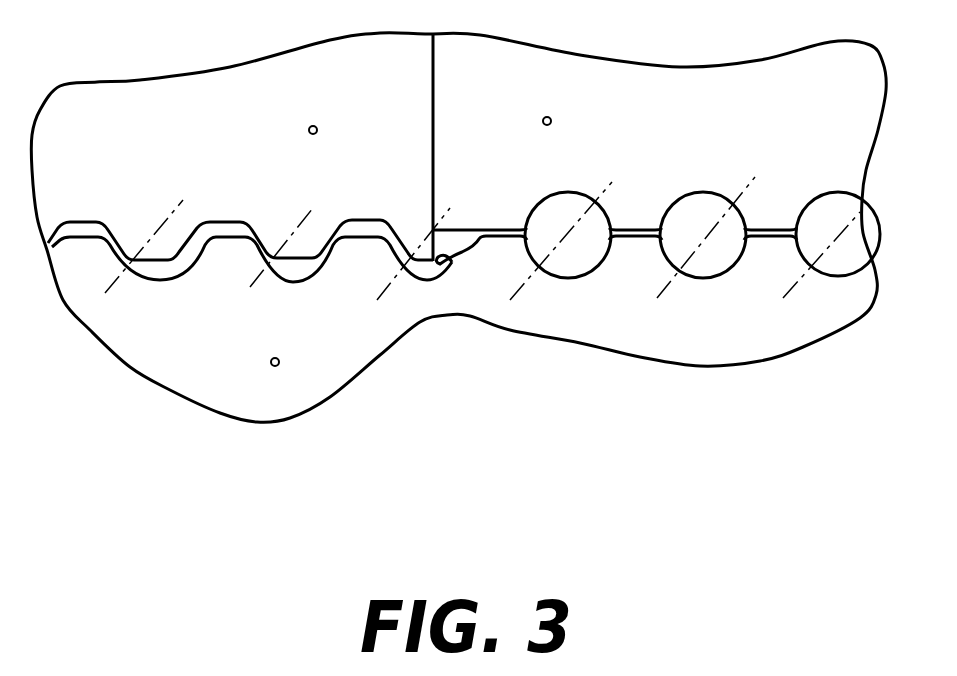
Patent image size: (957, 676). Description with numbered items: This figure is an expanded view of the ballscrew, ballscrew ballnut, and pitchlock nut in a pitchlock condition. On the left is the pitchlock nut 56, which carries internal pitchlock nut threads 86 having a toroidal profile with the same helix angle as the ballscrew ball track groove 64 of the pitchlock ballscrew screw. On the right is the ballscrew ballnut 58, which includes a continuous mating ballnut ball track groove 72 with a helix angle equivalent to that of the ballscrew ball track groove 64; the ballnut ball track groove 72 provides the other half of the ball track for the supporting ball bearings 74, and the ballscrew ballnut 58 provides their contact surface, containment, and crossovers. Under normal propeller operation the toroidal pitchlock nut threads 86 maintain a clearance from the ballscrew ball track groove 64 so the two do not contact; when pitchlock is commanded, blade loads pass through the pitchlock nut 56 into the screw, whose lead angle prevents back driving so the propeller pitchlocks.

The pitchlock nut 56 is at (204, 157).
The ballscrew ballnut 58 is at (734, 151).
The ballscrew ball track groove 64 is at (303, 282).
The ballnut ball track groove 72 is at (437, 270).
The ball bearings 74 is at (703, 255).
The pitchlock nut threads 86 is at (330, 243).